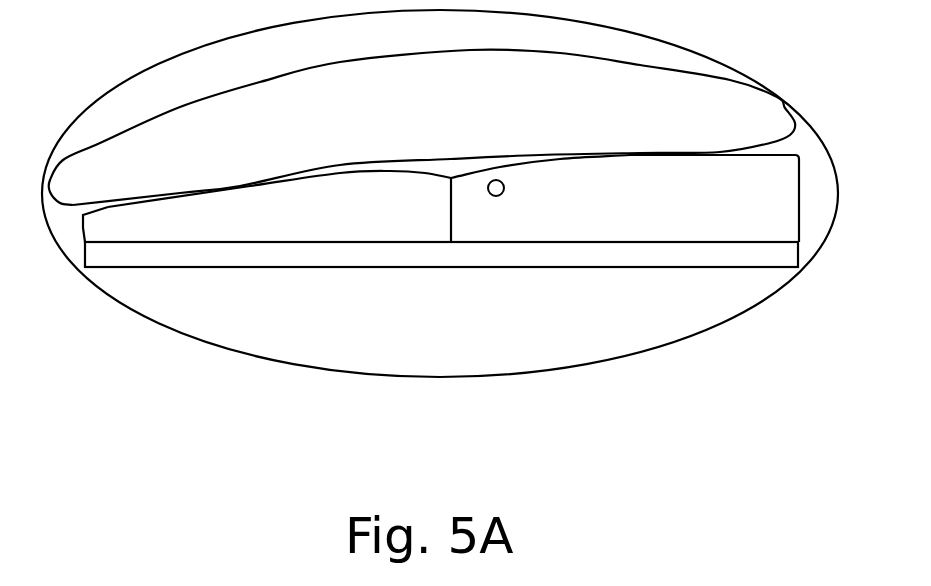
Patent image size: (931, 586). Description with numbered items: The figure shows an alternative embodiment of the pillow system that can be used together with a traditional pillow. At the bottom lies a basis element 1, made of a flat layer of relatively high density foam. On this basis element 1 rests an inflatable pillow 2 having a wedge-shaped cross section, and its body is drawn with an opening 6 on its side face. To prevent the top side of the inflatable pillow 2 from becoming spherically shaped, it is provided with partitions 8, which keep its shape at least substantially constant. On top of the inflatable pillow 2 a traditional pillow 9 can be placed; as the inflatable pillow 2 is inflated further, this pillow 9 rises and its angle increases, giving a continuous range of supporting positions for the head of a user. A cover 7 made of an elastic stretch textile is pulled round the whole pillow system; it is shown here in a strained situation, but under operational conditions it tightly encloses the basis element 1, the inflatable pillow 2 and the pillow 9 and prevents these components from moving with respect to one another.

The basis element 1 is at (773, 260).
The inflatable pillow 2 is at (802, 160).
The opening 6 is at (506, 189).
The cover 7 is at (720, 320).
The partitions 8 is at (450, 206).
The pillow 9 is at (763, 108).